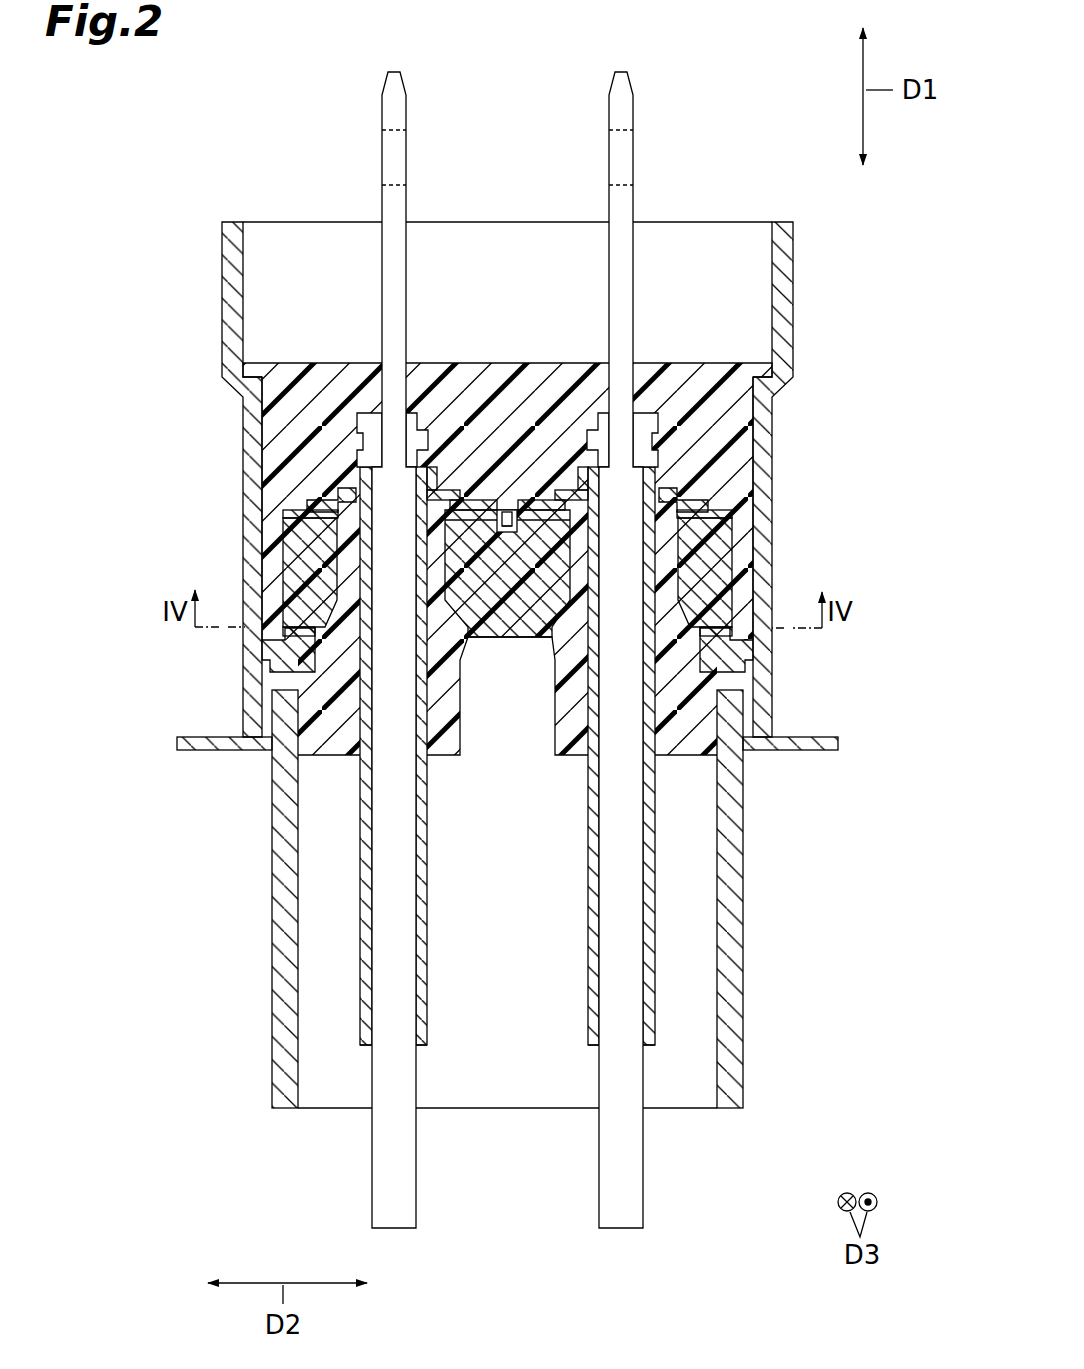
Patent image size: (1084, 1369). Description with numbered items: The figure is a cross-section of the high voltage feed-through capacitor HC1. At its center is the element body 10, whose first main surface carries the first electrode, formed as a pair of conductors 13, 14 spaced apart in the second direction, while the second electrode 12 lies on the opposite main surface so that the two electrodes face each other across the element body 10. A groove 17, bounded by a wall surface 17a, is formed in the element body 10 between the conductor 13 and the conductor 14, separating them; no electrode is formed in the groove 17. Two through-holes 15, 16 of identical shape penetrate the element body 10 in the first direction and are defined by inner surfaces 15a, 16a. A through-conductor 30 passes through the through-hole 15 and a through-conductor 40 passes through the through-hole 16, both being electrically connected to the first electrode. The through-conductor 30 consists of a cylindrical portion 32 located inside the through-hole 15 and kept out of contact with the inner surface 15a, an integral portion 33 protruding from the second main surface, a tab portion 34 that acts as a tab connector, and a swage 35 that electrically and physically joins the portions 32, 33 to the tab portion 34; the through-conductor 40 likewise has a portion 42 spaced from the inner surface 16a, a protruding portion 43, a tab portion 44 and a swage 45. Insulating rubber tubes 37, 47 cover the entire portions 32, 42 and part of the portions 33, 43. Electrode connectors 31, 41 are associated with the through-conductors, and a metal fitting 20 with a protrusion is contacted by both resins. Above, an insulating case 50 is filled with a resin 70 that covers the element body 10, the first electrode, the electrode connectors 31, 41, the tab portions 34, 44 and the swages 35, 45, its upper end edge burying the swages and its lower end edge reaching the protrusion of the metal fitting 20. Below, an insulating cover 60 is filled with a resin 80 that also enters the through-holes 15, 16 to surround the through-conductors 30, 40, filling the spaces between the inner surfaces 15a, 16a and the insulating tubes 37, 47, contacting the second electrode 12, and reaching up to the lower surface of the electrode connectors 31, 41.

The element body 10 is at (300, 633).
The second electrode 12 is at (318, 650).
The conductor 13 is at (310, 535).
The conductor 14 is at (727, 517).
The through-hole 15 is at (350, 636).
The inner surface 15a is at (335, 548).
The through-hole 16 is at (665, 636).
The inner surface 16a is at (668, 545).
The groove 17 is at (503, 510).
The wall surface 17a is at (512, 510).
The metal fitting 20 is at (226, 737).
The through-conductor 30 is at (247, 608).
The electrode connector 31 is at (335, 488).
The portion located inside the through-hole 32 is at (350, 478).
The portion protruding from the second main surface 33 is at (390, 758).
The tab portion 34 is at (310, 400).
The swage 35 is at (357, 430).
The insulating tube 37 is at (362, 1047).
The through-conductor 40 is at (766, 612).
The electrode connector 41 is at (687, 492).
The portion located inside the through-hole 42 is at (663, 488).
The portion protruding from the second main surface 43 is at (625, 758).
The tab portion 44 is at (630, 402).
The swage 45 is at (658, 432).
The insulating tube 47 is at (655, 1047).
The insulating case 50 is at (793, 236).
The insulating cover 60 is at (735, 1060).
The resin 70 is at (445, 405).
The resin 80 is at (525, 630).
The high voltage feed-through capacitor HC1 is at (242, 86).